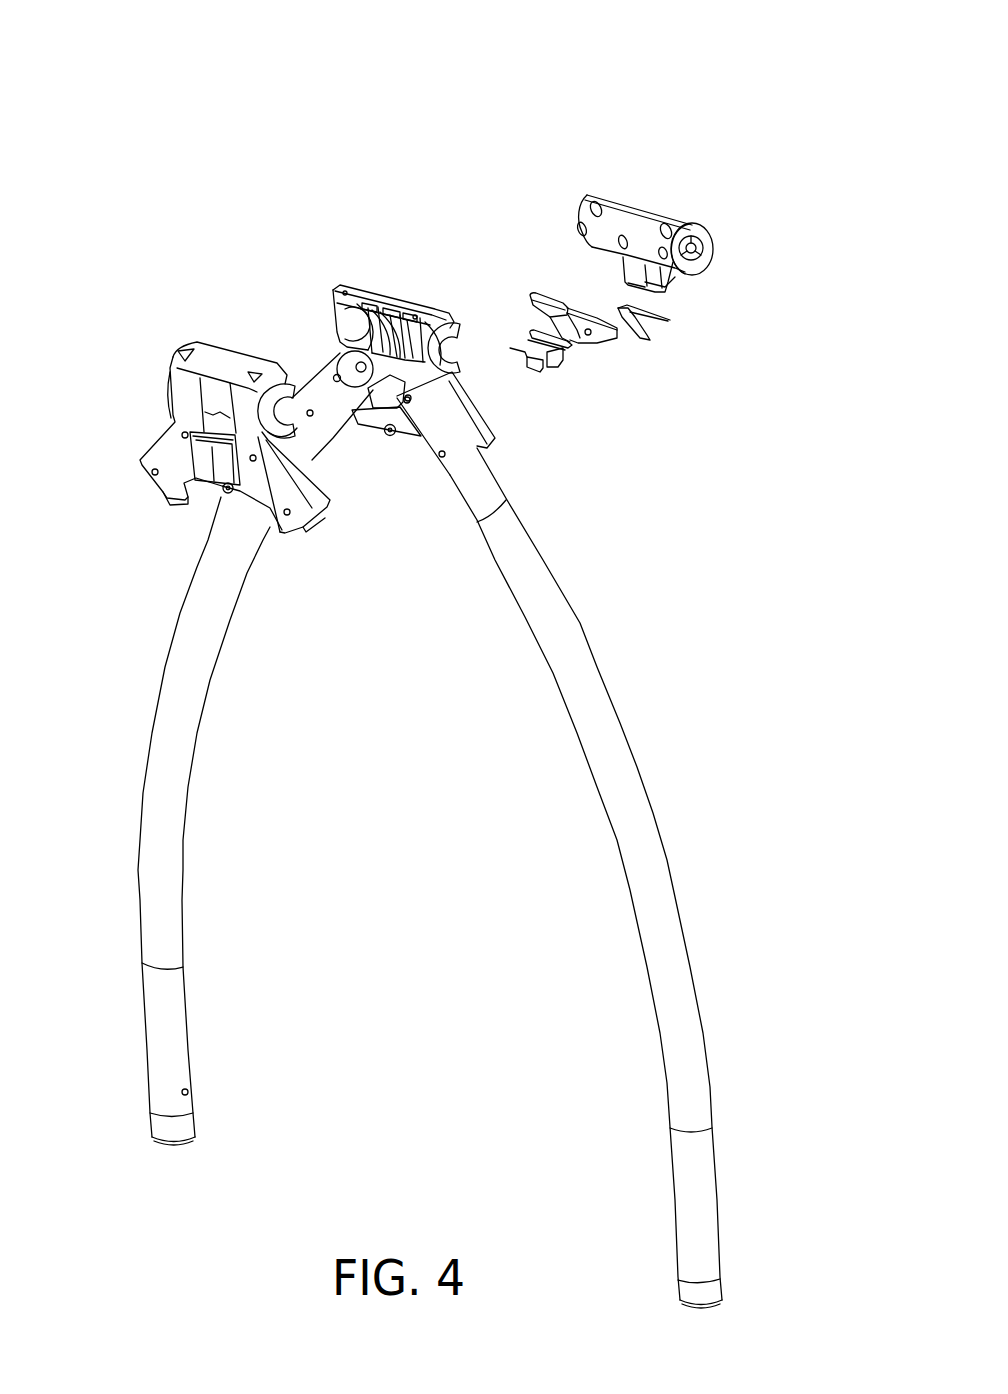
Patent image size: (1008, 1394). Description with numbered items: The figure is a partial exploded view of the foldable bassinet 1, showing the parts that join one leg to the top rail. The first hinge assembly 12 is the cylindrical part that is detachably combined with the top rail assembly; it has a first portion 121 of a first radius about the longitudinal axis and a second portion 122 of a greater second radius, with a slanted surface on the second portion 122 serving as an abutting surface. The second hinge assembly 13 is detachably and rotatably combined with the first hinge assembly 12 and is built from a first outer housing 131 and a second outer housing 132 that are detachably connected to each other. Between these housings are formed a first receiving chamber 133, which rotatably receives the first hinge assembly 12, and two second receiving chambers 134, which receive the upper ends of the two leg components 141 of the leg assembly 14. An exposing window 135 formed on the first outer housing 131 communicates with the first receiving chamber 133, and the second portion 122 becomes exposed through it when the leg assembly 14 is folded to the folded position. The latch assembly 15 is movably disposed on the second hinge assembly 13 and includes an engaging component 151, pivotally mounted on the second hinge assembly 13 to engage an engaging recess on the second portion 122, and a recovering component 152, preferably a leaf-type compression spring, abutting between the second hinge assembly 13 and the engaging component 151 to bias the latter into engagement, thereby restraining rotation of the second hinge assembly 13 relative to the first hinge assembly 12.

The foldable bassinet 1 is at (622, 82).
The first hinge assembly 12 is at (825, 280).
The first portion 121 is at (712, 246).
The second portion 122 is at (672, 278).
The second hinge assembly 13 is at (302, 158).
The first outer housing 131 is at (217, 362).
The second outer housing 132 is at (355, 288).
The first receiving chamber 133 is at (352, 312).
The second receiving chamber 134 is at (356, 455).
The exposing window 135 is at (210, 400).
The leg assembly 14 is at (553, 997).
The leg component 141 is at (172, 851).
The latch assembly 15 is at (771, 383).
The engaging component 151 is at (592, 343).
The recovering component 152 is at (642, 338).